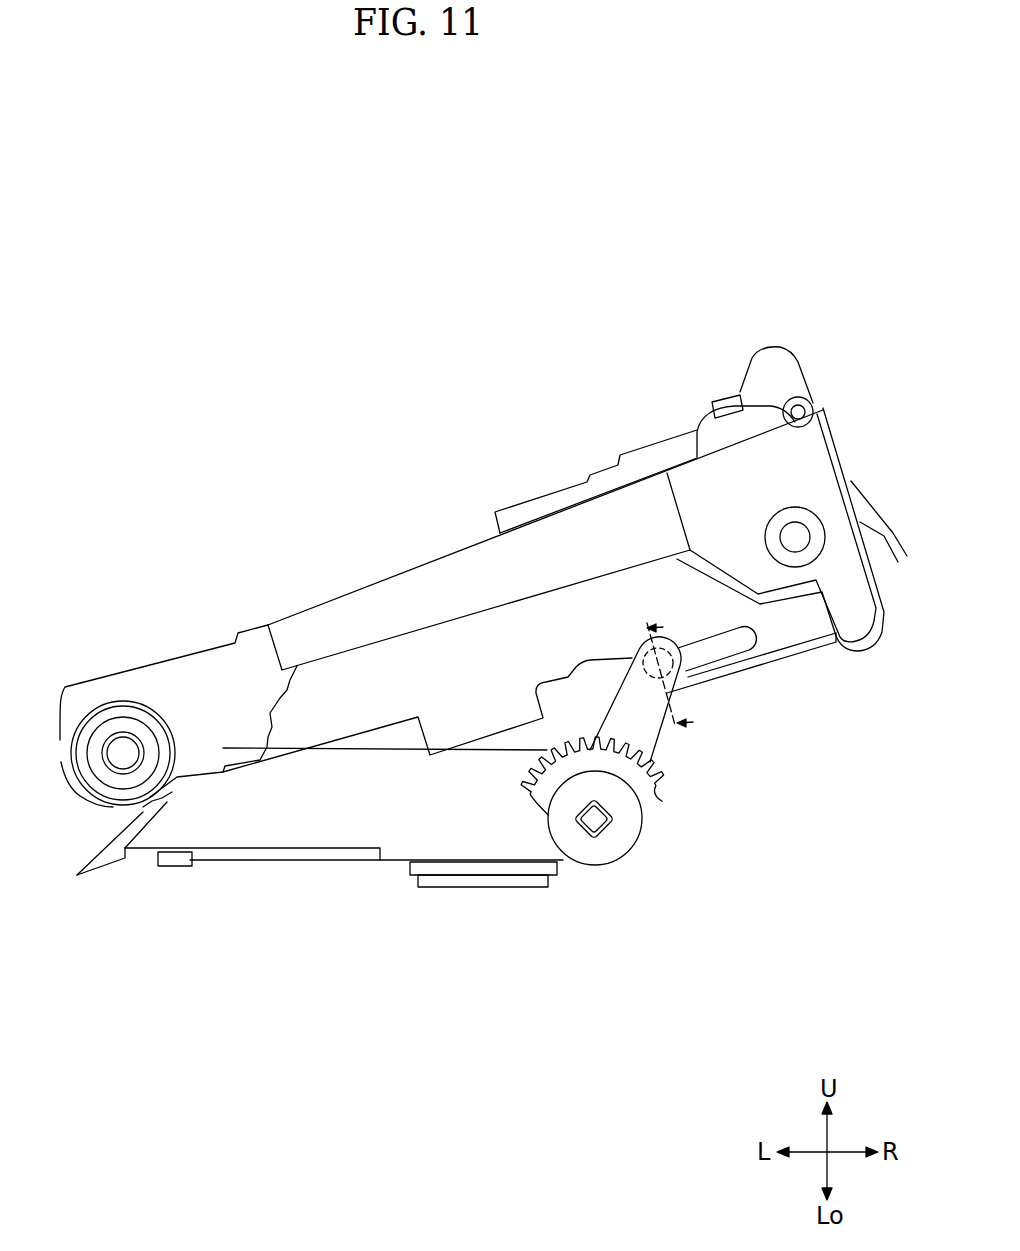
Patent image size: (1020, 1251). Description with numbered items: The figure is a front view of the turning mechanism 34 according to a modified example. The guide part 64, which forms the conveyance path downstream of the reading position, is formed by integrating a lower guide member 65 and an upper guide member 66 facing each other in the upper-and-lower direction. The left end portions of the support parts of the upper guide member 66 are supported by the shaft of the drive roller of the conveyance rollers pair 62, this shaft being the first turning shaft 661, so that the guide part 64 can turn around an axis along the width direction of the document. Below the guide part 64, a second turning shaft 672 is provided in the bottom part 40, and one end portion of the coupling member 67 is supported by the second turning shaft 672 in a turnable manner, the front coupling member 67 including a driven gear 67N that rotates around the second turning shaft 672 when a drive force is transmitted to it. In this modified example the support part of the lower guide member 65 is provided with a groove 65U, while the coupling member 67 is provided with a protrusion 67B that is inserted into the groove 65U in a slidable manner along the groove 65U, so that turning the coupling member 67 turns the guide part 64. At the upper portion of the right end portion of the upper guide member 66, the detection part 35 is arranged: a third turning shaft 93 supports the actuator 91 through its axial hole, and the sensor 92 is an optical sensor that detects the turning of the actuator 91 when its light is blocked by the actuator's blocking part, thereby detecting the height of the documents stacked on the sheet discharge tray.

The turning mechanism 34 is at (615, 210).
The detection part 35 is at (780, 302).
The bottom part 40 is at (368, 858).
The conveyance rollers pair 62 is at (95, 808).
The guide part 64 is at (362, 566).
The lower guide member 65 is at (296, 728).
The groove 65U is at (745, 645).
The upper guide member 66 is at (216, 644).
The first turning shaft 661 is at (105, 760).
The coupling member 67 is at (656, 736).
The protrusion 67B is at (680, 680).
The driven gear 67N is at (648, 792).
The second turning shaft 672 is at (596, 843).
The actuator 91 is at (797, 350).
The sensor 92 is at (720, 394).
The third turning shaft 93 is at (807, 410).